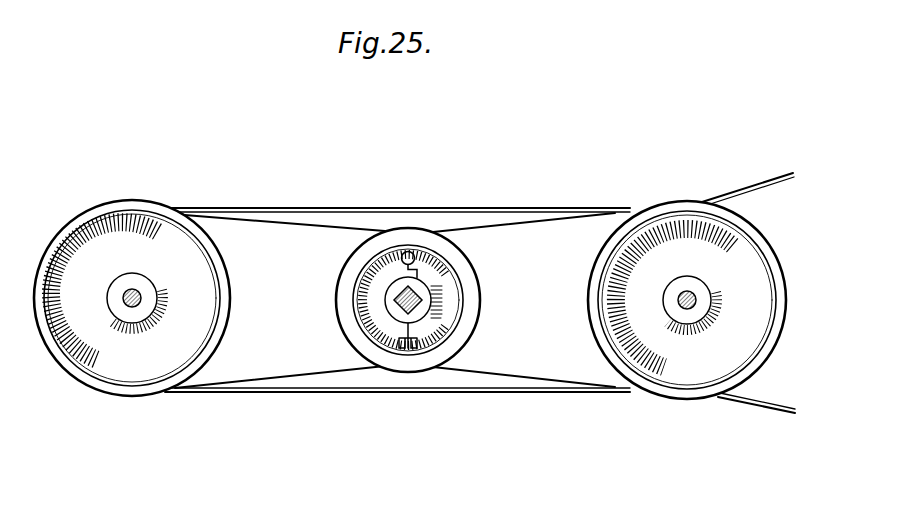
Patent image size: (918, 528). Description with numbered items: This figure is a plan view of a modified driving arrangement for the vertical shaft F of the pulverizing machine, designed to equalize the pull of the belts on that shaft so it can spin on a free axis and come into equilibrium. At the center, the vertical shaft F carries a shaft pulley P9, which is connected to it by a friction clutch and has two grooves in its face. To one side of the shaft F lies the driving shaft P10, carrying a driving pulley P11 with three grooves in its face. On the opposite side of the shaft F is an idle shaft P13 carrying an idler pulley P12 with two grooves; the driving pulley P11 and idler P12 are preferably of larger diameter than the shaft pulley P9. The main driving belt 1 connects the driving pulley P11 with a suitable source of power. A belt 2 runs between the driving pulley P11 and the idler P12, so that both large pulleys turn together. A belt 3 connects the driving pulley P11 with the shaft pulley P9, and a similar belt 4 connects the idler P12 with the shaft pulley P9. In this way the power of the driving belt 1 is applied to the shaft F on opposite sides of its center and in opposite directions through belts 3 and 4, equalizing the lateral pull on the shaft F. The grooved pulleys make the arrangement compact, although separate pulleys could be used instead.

The idle shaft P13 is at (131, 292).
The idler pulley P12 is at (212, 308).
The shaft pulley P9 is at (472, 320).
The vertical shaft F is at (414, 293).
The driving shaft P10 is at (695, 288).
The driving pulley P11 is at (700, 363).
The main driving belt 1 is at (763, 178).
The belt 2 is at (477, 205).
The belt 3 is at (562, 226).
The belt 4 is at (284, 225).